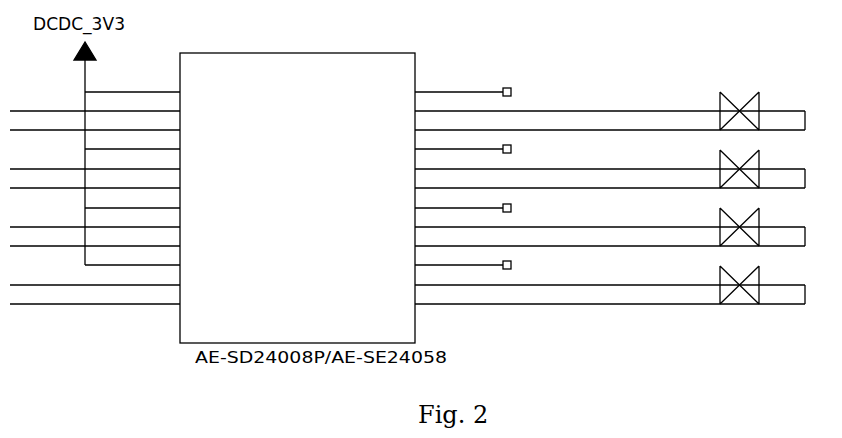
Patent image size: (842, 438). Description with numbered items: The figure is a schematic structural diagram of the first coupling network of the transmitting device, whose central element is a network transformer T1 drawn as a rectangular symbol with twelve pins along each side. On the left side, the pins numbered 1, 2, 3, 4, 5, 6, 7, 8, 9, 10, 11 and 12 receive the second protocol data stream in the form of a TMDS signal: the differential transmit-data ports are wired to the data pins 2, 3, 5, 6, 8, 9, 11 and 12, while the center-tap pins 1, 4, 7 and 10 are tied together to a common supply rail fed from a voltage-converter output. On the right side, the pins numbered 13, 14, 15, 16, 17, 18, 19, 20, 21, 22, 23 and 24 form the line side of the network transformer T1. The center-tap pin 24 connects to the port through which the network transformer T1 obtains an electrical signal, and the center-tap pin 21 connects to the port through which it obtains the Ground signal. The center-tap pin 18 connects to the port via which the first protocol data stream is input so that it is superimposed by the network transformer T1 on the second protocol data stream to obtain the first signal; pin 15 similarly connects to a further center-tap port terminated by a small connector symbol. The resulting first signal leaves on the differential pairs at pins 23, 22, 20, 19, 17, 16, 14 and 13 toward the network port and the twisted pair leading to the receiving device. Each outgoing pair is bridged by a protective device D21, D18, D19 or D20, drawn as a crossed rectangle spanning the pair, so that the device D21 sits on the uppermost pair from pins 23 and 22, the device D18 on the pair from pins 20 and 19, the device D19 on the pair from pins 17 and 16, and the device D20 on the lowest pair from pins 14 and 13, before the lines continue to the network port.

The transformer pin 1 TCT1 1 is at (160, 91).
The transformer pin 2 TD1+ 2 is at (122, 108).
The transformer pin 3 TD1- 3 is at (122, 127).
The transformer pin 4 TCT2 4 is at (160, 148).
The transformer pin 5 TD2+ 5 is at (122, 166).
The transformer pin 6 TD2- 6 is at (122, 185).
The transformer pin 7 TCT3 7 is at (160, 207).
The transformer pin 8 TD3+ 8 is at (122, 224).
The transformer pin 9 TD3- 9 is at (122, 243).
The transformer pin 10 TCT4 10 is at (160, 264).
The transformer pin 11 TD4+ 11 is at (122, 282).
The transformer pin 12 TD4- 12 is at (122, 301).
The transformer pin 13 MX4- 13 is at (580, 301).
The transformer pin 14 MX4+ 14 is at (580, 282).
The transformer pin 15 MCT4 15 is at (433, 264).
The transformer pin 16 MX3- 16 is at (580, 243).
The transformer pin 17 MX3+ 17 is at (580, 224).
The transformer pin 18 MCT3 18 is at (433, 207).
The transformer pin 19 MX2- 19 is at (580, 185).
The transformer pin 20 MX2+ 20 is at (580, 166).
The transformer pin 21 MCT2 21 is at (433, 148).
The transformer pin 22 MX1- 22 is at (580, 127).
The transformer pin 23 MX1+ 23 is at (580, 108).
The transformer pin 24 MCT1 24 is at (433, 91).
The network transformer T1 is at (297, 190).
The ESD protection diode ESD7951 D18 is at (752, 160).
The ESD protection diode ESD7951 D19 is at (752, 218).
The ESD protection diode ESD7951 D20 is at (752, 276).
The ESD protection diode ESD7951 D21 is at (752, 102).